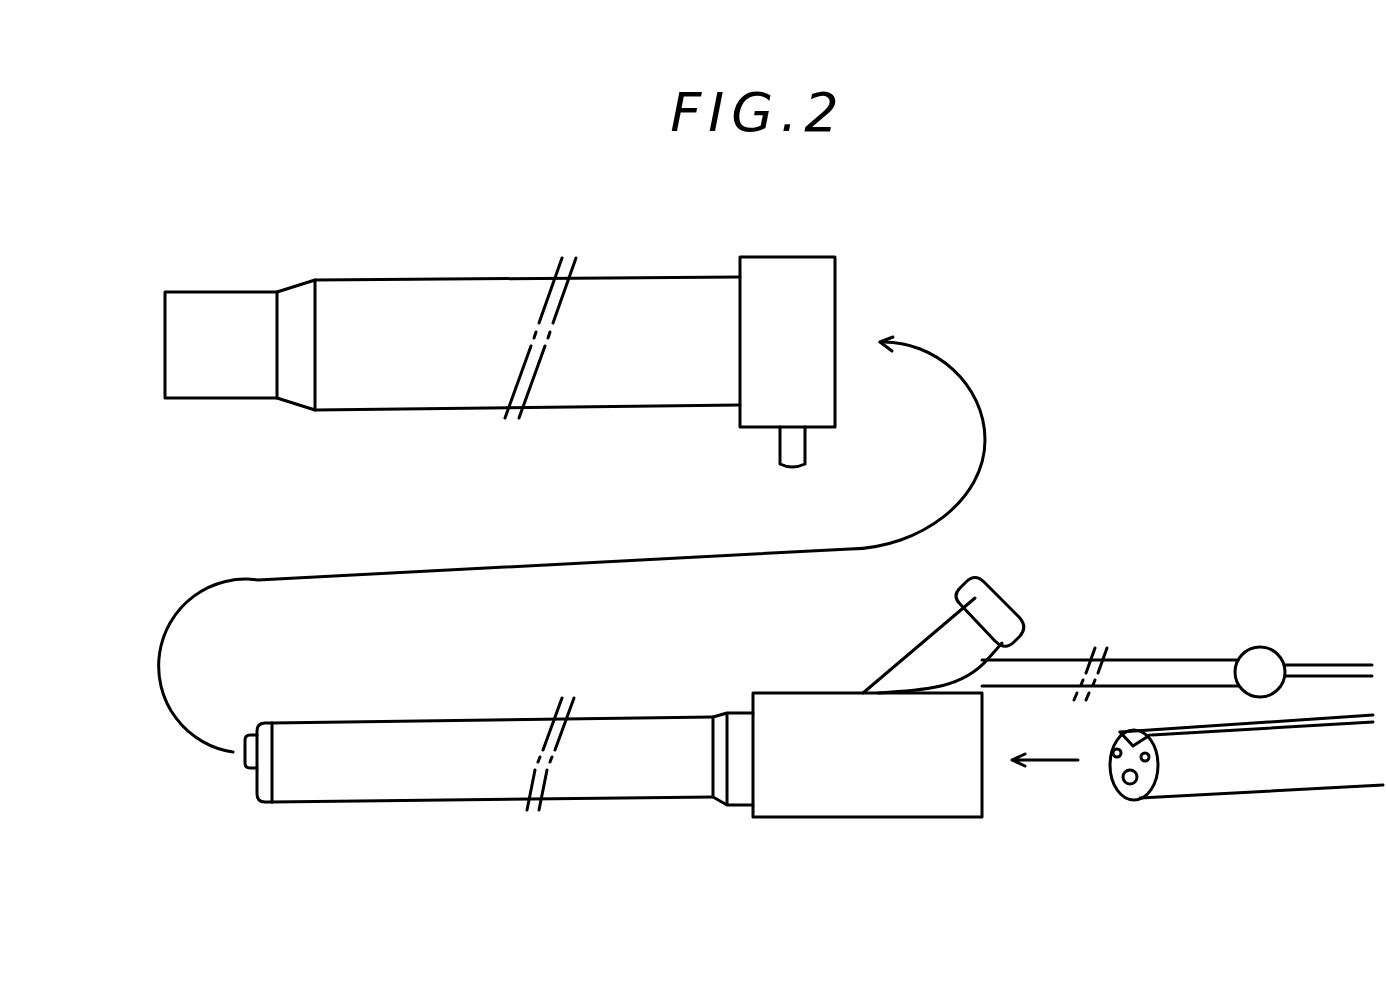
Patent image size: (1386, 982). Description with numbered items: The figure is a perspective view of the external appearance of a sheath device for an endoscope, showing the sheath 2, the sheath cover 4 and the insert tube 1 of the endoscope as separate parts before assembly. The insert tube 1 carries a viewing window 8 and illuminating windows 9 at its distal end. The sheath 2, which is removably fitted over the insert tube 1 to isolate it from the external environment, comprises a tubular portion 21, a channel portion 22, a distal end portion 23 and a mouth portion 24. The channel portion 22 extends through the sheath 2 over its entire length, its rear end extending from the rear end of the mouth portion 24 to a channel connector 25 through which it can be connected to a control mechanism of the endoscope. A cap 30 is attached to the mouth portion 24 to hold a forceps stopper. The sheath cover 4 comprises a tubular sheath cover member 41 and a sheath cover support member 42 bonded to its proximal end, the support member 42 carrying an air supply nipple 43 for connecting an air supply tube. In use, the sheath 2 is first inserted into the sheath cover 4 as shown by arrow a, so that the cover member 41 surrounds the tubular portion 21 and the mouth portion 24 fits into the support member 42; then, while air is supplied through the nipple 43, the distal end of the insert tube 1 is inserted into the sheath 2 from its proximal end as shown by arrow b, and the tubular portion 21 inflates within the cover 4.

The insert tube 1 is at (1223, 791).
The sheath 2 is at (808, 670).
The sheath cover 4 is at (500, 339).
The viewing window 8 is at (1123, 787).
The illuminating windows 9 is at (1143, 757).
The tubular portion 21 is at (427, 737).
The channel portion 22 is at (1155, 670).
The distal end portion 23 is at (263, 740).
The mouth portion 24 is at (797, 708).
The channel connector 25 is at (1267, 660).
The cap 30 is at (993, 595).
The tubular sheath cover member 41 is at (437, 275).
The sheath cover support member 42 is at (790, 275).
The air supply nipple 43 is at (790, 447).
The arrow a is at (975, 392).
The arrow b is at (1048, 760).